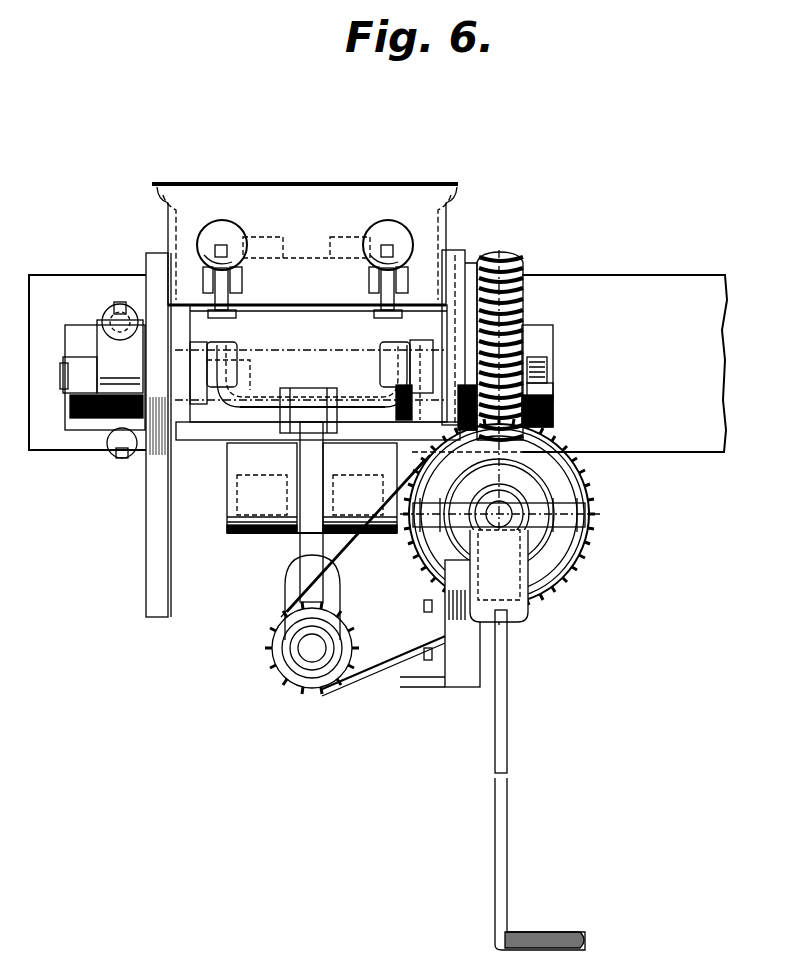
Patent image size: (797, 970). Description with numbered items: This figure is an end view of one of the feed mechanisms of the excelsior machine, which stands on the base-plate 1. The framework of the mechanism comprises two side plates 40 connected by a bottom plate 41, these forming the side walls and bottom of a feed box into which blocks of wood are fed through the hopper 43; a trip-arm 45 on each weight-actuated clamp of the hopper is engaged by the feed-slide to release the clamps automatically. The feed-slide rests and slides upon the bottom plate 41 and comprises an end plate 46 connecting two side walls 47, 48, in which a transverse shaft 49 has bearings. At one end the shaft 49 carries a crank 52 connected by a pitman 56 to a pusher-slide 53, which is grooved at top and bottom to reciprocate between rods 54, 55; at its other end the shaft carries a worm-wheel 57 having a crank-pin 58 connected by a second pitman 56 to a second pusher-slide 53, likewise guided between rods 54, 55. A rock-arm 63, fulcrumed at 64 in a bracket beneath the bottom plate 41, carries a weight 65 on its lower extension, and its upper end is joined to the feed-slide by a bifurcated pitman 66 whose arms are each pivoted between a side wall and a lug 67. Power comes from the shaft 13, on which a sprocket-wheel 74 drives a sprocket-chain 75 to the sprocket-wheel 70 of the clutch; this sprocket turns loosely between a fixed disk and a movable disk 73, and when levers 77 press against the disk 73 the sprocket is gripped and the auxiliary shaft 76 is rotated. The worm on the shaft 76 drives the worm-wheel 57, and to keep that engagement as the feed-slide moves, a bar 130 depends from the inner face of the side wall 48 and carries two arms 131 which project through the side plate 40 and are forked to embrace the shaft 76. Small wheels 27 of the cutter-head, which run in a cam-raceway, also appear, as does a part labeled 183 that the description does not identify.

The base-plate 1 is at (378, 519).
The shaft 13 is at (305, 650).
The small wheel 27 is at (262, 243).
The side plate 40 is at (162, 615).
The bottom plate 41 is at (222, 440).
The hopper 43 is at (390, 187).
The trip-arm 45 is at (232, 300).
The end plate 46 is at (311, 363).
The side wall 47 is at (198, 338).
The side wall 48 is at (427, 352).
The transverse shaft 49 is at (237, 358).
The crank 52 is at (120, 356).
The pusher-slide 53 is at (85, 428).
The rod 54 is at (113, 312).
The rod 55 is at (115, 452).
The pitman 56 is at (75, 378).
The worm-wheel 57 is at (516, 266).
The crank-pin 58 is at (553, 390).
The rock-arm 63 is at (297, 545).
The fulcrum 64 is at (272, 490).
The weight 65 is at (250, 535).
The bifurcated pitman 66 is at (280, 395).
The lug 67 is at (388, 345).
The sprocket-wheel 70 is at (420, 565).
The movable disk 73 is at (600, 552).
The sprocket-wheel 74 is at (292, 688).
The sprocket-chain 75 is at (408, 665).
The auxiliary shaft 76 is at (535, 515).
The lever 77 is at (590, 516).
The bar 130 is at (360, 488).
The arm 131 is at (600, 452).
The lever 183 is at (509, 865).